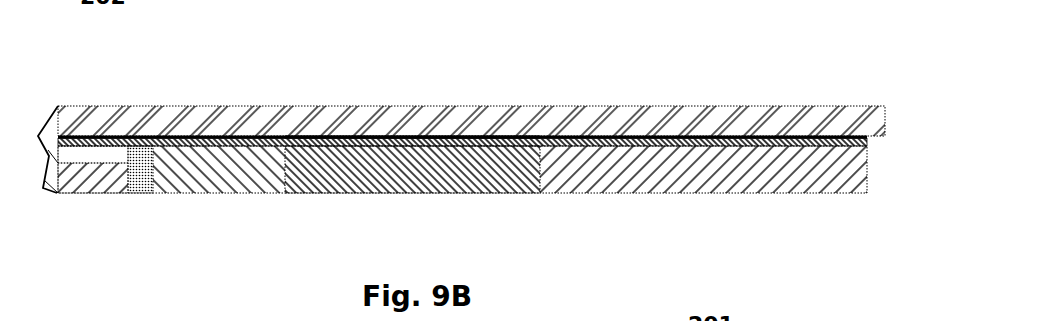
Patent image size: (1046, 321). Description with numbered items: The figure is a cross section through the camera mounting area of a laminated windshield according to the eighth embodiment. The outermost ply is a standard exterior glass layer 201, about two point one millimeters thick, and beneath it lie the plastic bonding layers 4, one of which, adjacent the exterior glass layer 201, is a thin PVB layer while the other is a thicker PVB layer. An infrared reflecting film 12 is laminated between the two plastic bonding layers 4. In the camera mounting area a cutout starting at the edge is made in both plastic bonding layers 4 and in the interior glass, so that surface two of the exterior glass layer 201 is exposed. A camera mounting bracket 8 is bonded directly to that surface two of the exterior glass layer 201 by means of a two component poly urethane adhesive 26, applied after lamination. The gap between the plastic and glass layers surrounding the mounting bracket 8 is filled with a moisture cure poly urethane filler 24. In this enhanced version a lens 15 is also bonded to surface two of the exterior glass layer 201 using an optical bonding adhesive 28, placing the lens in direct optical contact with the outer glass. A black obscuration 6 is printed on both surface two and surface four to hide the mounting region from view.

The exterior glass layer 201 is at (703, 104).
The plastic bonding layer 4 is at (123, 143).
The black obscuration 6 is at (100, 134).
The camera mounting bracket 8 is at (447, 167).
The infrared reflecting film 12 is at (78, 138).
The moisture cure poly urethane filler 24 is at (139, 199).
The two component poly urethane adhesive 26 is at (243, 148).
The lens 15 is at (529, 194).
The optical bonding adhesive 28 is at (405, 136).